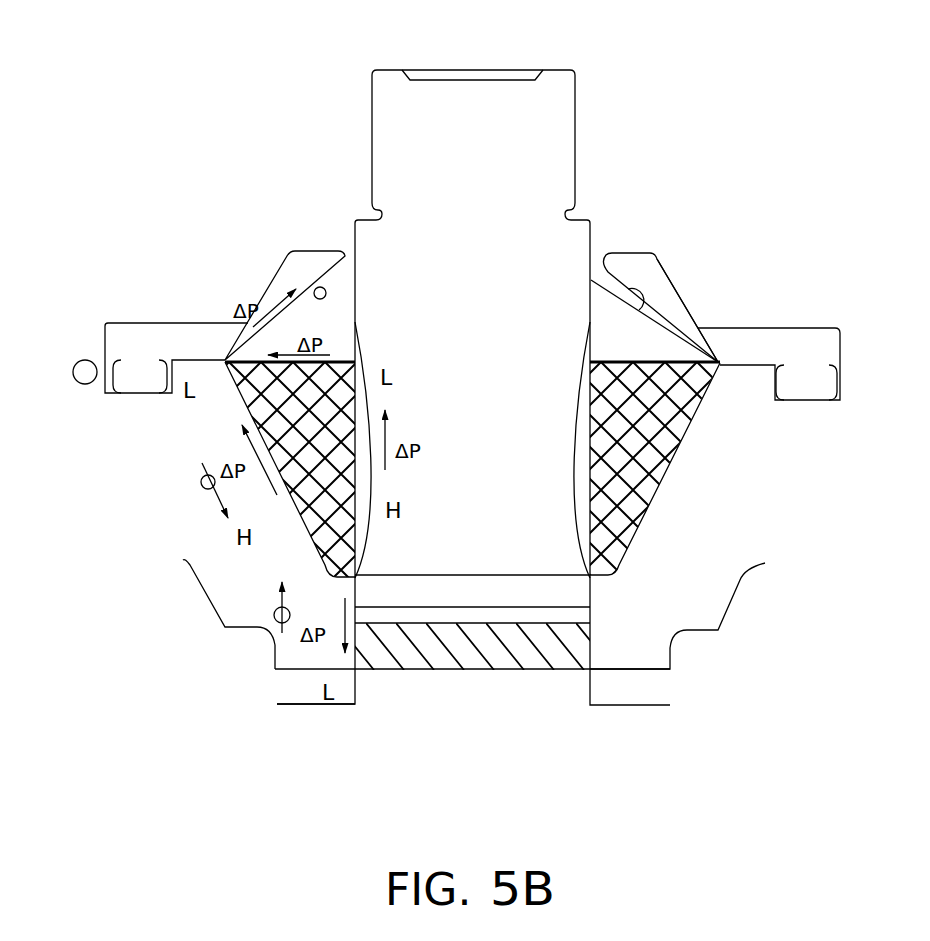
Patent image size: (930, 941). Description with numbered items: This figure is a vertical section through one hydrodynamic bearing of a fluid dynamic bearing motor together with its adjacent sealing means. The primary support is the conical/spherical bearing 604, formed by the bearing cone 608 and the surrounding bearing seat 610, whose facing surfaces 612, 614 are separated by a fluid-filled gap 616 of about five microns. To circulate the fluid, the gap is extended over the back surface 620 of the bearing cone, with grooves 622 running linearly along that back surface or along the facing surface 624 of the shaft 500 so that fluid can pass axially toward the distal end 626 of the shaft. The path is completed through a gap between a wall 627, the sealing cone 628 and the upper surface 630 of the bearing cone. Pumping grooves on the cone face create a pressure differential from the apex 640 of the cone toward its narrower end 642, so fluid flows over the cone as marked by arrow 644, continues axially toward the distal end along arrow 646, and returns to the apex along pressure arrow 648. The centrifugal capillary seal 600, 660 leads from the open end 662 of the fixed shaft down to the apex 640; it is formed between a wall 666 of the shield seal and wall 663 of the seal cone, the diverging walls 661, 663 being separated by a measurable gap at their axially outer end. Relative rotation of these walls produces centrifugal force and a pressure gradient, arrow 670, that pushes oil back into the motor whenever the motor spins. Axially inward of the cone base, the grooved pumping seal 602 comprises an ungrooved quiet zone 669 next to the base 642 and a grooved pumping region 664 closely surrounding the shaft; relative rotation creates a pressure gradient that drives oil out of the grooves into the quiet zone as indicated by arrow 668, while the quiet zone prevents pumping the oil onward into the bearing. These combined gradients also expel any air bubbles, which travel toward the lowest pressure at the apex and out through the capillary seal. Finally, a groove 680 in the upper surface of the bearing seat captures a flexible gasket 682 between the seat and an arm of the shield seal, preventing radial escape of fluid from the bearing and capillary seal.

The shaft 500 is at (575, 130).
The centrifugal capillary seal 600 is at (742, 275).
The grooved pumping seal 602 is at (614, 634).
The conical/spherical bearing 604 is at (733, 478).
The bearing cone 608 is at (650, 424).
The bearing seat 610 is at (752, 565).
The facing surface 612 is at (708, 396).
The facing surface 614 is at (660, 490).
The gap 616 is at (723, 363).
The back surface 620 is at (357, 398).
The grooves 622 is at (367, 487).
The facing surface 624 is at (360, 352).
The distal end 626 is at (473, 90).
The wall 627 is at (360, 328).
The sealing cone 628 is at (348, 297).
The upper surface 630 is at (222, 366).
The apex 640 is at (216, 354).
The narrower end 642 is at (327, 568).
The arrow 644 is at (203, 487).
The arrow 646 is at (397, 432).
The pressure arrow 648 is at (320, 322).
The centrifugal capillary seal 660 is at (643, 303).
The diverging wall 661 is at (690, 312).
The open end 662 is at (598, 265).
The wall 663 is at (703, 343).
The grooved pumping region 664 is at (572, 650).
The wall 666 is at (310, 655).
The arrow 668 is at (132, 333).
The quiet zone 669 is at (593, 593).
The pressure gradient arrow 670 is at (250, 290).
The groove 680 is at (108, 393).
The flexible gasket 682 is at (135, 382).